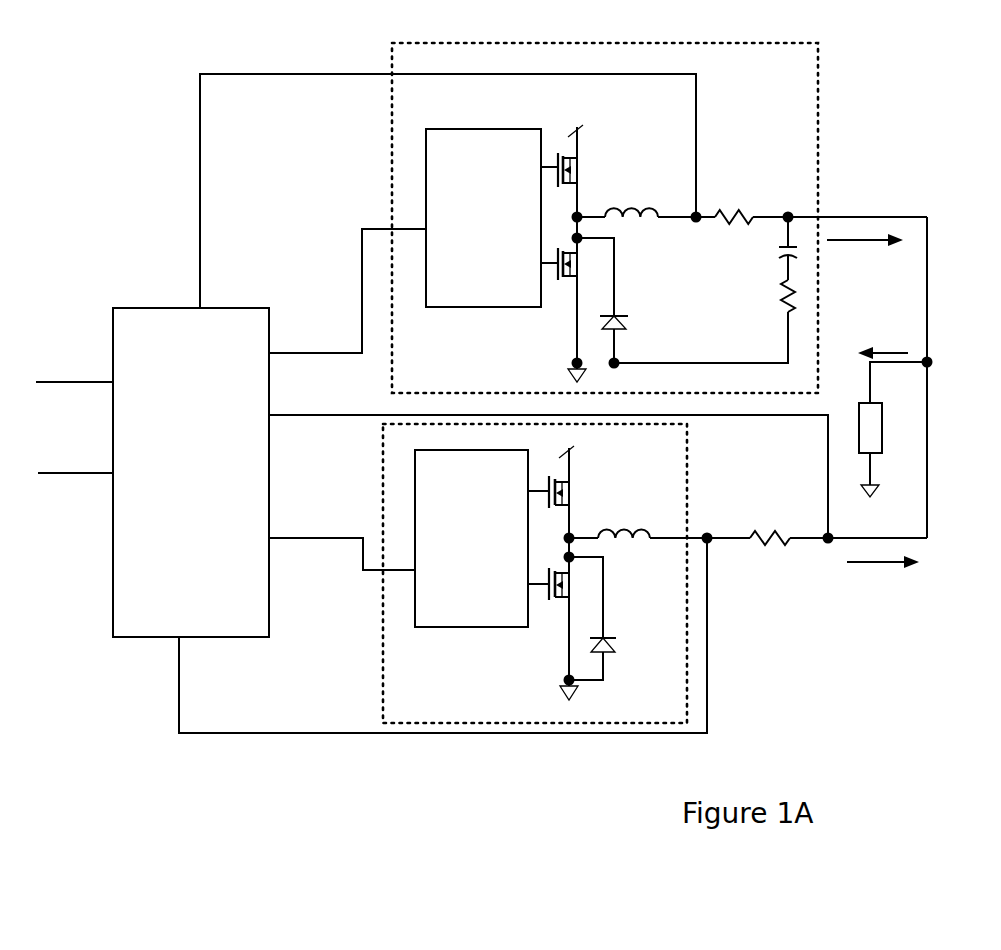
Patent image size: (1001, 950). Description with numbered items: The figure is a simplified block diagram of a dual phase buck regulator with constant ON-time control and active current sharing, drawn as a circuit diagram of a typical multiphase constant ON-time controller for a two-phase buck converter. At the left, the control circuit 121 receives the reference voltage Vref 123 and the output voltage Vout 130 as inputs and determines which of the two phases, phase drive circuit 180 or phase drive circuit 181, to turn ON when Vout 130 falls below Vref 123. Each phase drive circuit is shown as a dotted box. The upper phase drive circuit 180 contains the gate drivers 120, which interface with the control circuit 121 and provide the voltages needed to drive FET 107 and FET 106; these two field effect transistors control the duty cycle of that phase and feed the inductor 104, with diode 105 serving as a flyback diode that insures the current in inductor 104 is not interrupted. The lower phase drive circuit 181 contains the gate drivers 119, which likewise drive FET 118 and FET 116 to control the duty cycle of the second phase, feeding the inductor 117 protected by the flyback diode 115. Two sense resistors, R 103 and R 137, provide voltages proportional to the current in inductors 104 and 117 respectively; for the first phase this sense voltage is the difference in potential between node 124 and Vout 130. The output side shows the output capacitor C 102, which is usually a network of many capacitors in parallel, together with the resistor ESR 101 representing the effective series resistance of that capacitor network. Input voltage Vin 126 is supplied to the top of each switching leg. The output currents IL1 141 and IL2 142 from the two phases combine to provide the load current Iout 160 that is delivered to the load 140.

The resistor ESR 101 is at (778, 305).
The output capacitor 102 is at (780, 250).
The sense resistor 103 is at (733, 205).
The inductor 104 is at (633, 205).
The diode 105 is at (635, 320).
The FET 106 is at (565, 292).
The FET 107 is at (570, 170).
The diode 115 is at (607, 640).
The FET 116 is at (553, 620).
The inductor 117 is at (630, 553).
The FET 118 is at (562, 492).
The gate drivers 119 is at (460, 628).
The gate drivers 120 is at (497, 129).
The control circuit 121 is at (168, 305).
The reference voltage 123 is at (47, 357).
The node 124 is at (698, 123).
The input voltage Vin 126 is at (602, 107).
The output voltage 130 is at (55, 476).
The sense resistor 137 is at (765, 530).
The load 140 is at (878, 430).
The output current IL1 141 is at (863, 266).
The output current IL2 142 is at (867, 602).
The load current Iout 160 is at (893, 322).
The phase drive circuit 180 is at (818, 128).
The phase drive circuit 181 is at (383, 650).